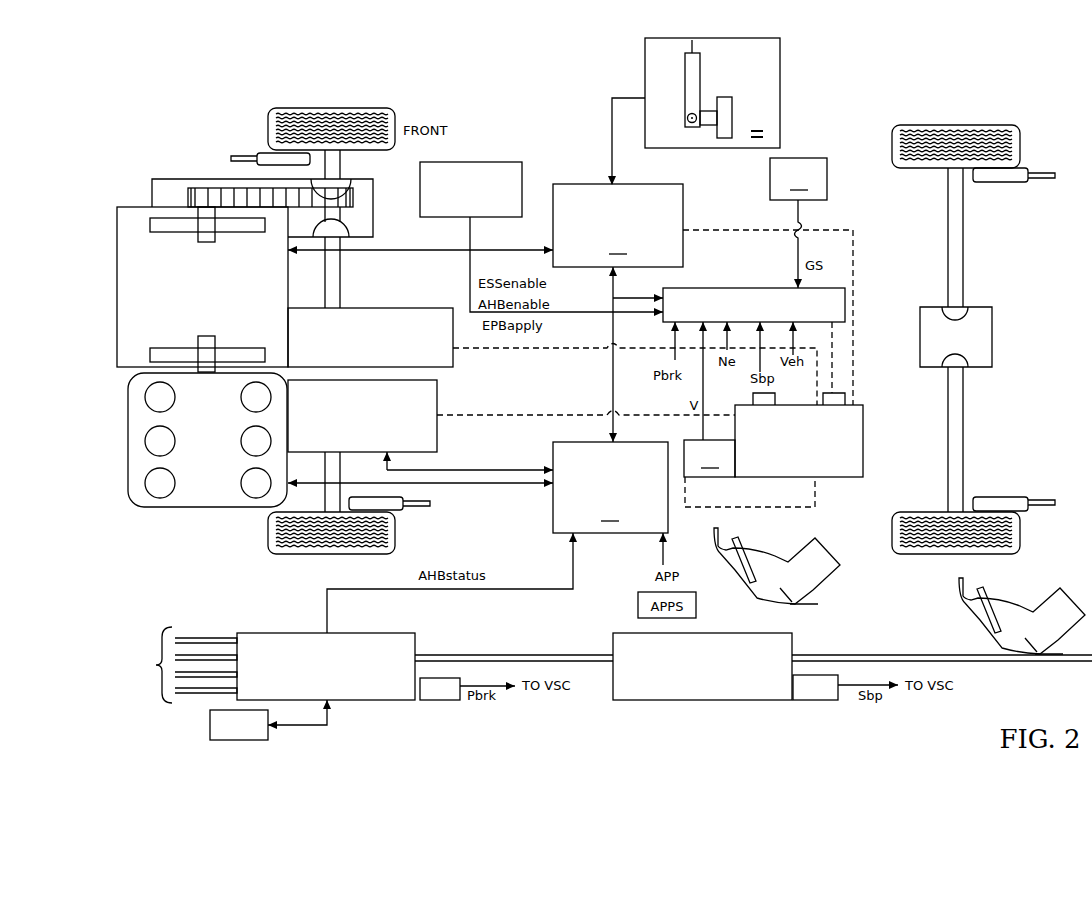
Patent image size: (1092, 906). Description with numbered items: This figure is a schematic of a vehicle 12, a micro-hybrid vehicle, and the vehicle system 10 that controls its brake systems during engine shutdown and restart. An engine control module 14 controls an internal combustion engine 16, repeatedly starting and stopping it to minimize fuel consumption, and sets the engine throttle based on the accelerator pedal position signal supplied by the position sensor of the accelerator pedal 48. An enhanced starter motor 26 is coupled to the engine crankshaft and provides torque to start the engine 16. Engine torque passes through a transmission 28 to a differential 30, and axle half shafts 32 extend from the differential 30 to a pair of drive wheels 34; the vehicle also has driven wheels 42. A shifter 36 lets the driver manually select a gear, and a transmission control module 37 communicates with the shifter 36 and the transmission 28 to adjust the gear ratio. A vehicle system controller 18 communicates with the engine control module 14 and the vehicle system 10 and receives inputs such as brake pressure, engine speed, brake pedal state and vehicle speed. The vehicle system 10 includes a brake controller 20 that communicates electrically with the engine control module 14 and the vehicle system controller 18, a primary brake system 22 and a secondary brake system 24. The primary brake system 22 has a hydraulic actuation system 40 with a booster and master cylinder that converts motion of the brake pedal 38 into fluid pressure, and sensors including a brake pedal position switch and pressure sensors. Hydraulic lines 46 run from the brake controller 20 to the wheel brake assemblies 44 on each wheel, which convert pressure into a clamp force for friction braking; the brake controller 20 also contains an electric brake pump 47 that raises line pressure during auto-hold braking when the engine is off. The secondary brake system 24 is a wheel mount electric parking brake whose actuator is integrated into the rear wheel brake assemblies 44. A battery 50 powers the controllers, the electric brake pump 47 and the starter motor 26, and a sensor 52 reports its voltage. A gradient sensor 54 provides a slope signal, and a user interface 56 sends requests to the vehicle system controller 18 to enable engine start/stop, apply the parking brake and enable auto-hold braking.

The vehicle system 10 is at (566, 714).
The vehicle 12 is at (196, 576).
The engine control module 14 is at (610, 487).
The internal combustion engine 16 is at (182, 503).
The vehicle system controller 18 is at (710, 288).
The brake controller 20 is at (415, 642).
The primary brake system 22 is at (777, 714).
The secondary brake system 24 is at (210, 722).
The enhanced starter motor 26 is at (437, 397).
The transmission 28 is at (117, 287).
The differential 30 is at (373, 214).
The axle half shafts 32 is at (340, 157).
The drive wheels 34 is at (330, 108).
The shifter 36 is at (780, 82).
The transmission control module 37 is at (618, 225).
The brake pedal 38 is at (985, 596).
The hydraulic actuation system 40 is at (792, 640).
The driven wheels 42 is at (957, 124).
The wheel brake assembly 44 is at (256, 153).
The hydraulic lines 46 is at (237, 153).
The electric brake pump 47 is at (400, 308).
The accelerator pedal 48 is at (740, 548).
The battery 50 is at (863, 432).
The sensor 52 is at (709, 458).
The gradient sensor 54 is at (798, 179).
The user interface 56 is at (478, 162).